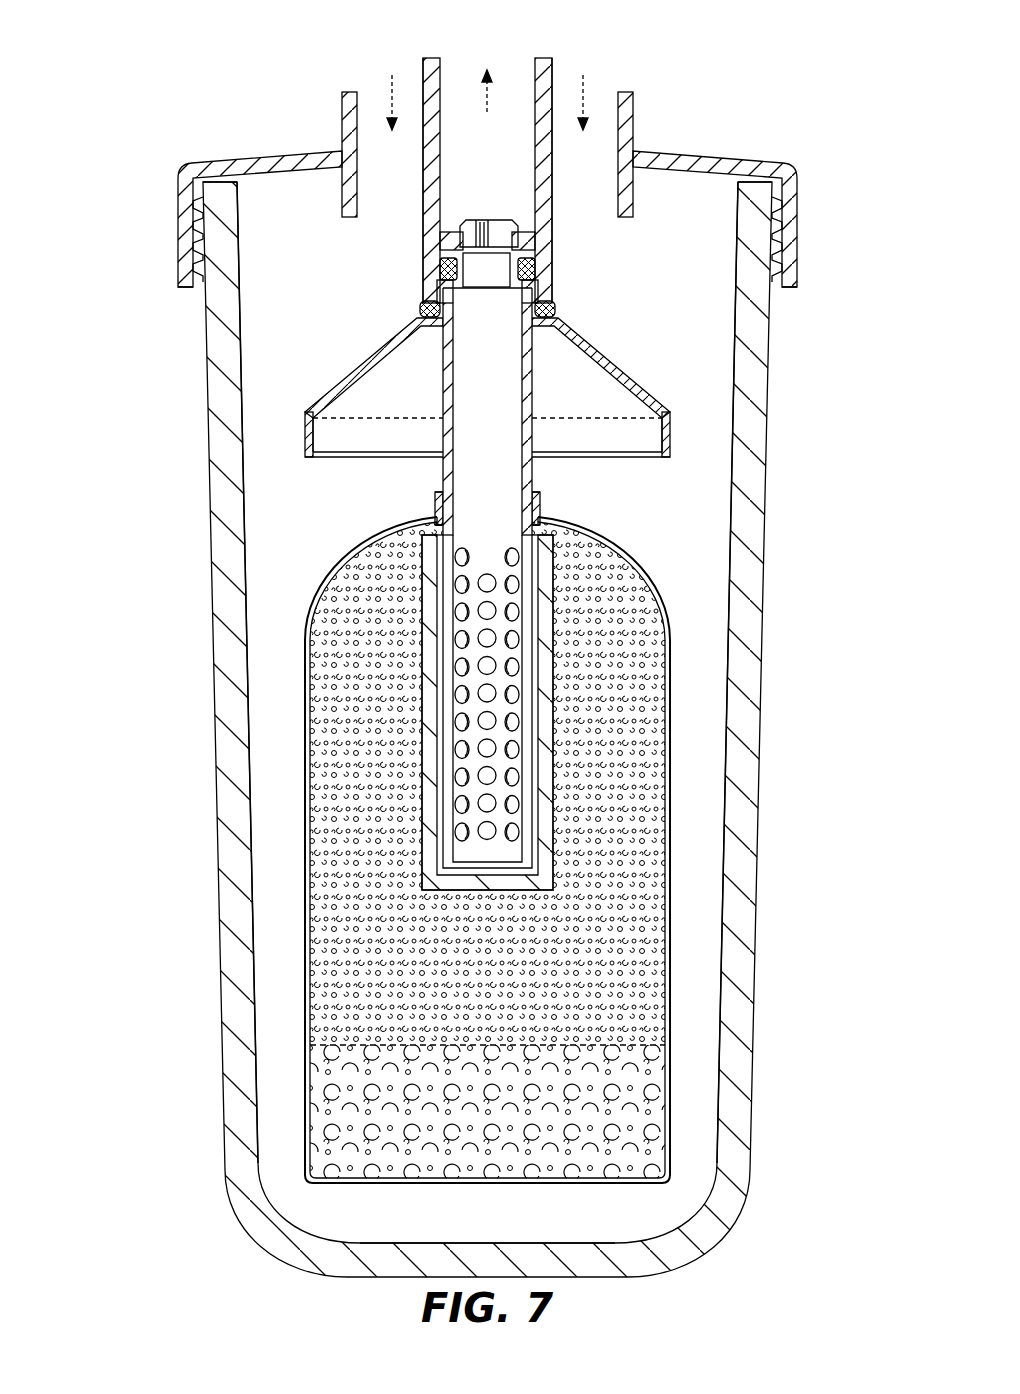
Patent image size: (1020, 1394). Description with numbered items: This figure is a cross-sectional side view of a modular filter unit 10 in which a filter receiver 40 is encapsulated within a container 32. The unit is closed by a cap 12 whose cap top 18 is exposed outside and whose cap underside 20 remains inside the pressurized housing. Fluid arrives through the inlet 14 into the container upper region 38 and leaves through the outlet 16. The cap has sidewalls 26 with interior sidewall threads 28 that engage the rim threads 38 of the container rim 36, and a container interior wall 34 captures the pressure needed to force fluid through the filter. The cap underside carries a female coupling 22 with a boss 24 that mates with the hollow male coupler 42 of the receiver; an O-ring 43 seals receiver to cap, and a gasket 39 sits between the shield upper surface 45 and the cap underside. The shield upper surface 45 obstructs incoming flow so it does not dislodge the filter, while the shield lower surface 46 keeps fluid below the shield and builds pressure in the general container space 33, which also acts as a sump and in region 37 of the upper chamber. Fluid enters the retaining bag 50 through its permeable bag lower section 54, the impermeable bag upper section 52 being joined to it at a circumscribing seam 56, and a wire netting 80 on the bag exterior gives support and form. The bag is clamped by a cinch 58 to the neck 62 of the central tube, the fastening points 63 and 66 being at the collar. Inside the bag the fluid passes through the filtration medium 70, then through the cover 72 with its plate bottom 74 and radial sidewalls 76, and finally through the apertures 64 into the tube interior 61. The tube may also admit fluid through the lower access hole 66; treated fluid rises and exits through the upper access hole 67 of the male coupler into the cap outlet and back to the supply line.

The modular filter unit 10 is at (152, 117).
The cap 12 is at (797, 188).
The inlet 14 is at (377, 92).
The outlet 16 is at (505, 78).
The cap top 18 is at (322, 150).
The cap underside 20 is at (424, 235).
The female coupling 22 is at (552, 242).
The boss 24 is at (423, 268).
The sidewalls 26 is at (178, 235).
The interior sidewall threads 28 is at (197, 268).
The container 32 is at (215, 838).
The container space 33 is at (263, 863).
The container interior wall 34 is at (733, 490).
The container rim 36 is at (237, 217).
The upper chamber 37 is at (679, 323).
The rim threads 38 is at (200, 272).
The gasket 39 is at (422, 308).
The filter receiver 40 is at (487, 359).
The male coupler 42 is at (505, 220).
The O-ring 43 is at (538, 268).
The shield upper surface 45 is at (380, 343).
The shield lower surface 46 is at (556, 398).
The retaining bag 50 is at (487, 850).
The bag upper section 52 is at (676, 918).
The bag lower section 54 is at (304, 1108).
The seam 56 is at (304, 1046).
The cinch 58 is at (545, 508).
The tube interior 61 is at (473, 448).
The neck 62 is at (403, 502).
The fastener 63 is at (436, 492).
The apertures 64 is at (405, 742).
The lower access hole 66 is at (539, 492).
The upper access hole 67 is at (474, 283).
The filtration medium 70 is at (351, 651).
The cover 72 is at (420, 600).
The plate bottom 74 is at (445, 900).
The radial sidewalls 76 is at (420, 800).
The wire netting 80 is at (657, 583).